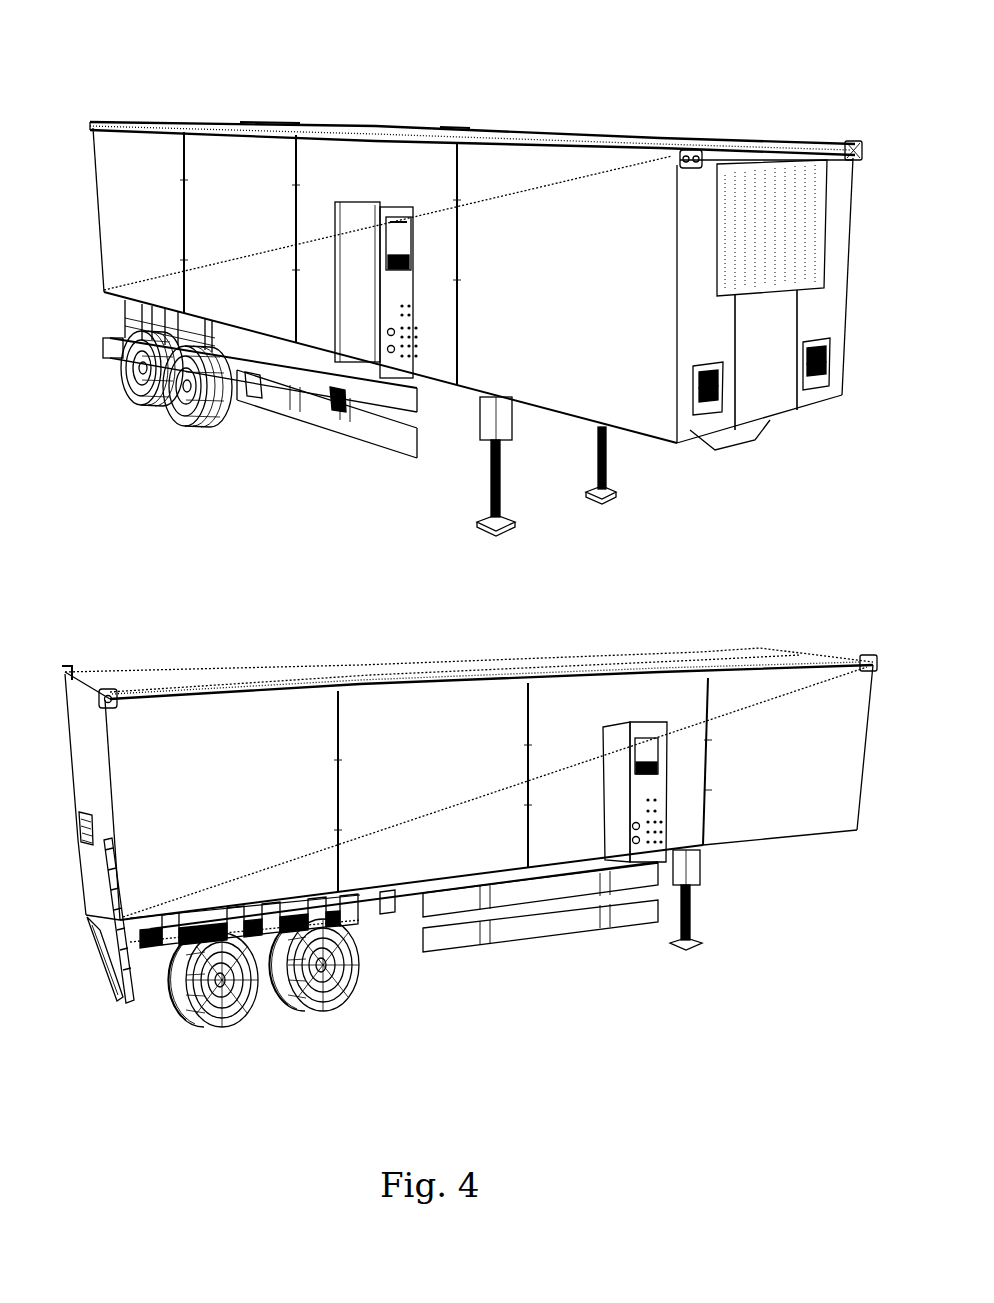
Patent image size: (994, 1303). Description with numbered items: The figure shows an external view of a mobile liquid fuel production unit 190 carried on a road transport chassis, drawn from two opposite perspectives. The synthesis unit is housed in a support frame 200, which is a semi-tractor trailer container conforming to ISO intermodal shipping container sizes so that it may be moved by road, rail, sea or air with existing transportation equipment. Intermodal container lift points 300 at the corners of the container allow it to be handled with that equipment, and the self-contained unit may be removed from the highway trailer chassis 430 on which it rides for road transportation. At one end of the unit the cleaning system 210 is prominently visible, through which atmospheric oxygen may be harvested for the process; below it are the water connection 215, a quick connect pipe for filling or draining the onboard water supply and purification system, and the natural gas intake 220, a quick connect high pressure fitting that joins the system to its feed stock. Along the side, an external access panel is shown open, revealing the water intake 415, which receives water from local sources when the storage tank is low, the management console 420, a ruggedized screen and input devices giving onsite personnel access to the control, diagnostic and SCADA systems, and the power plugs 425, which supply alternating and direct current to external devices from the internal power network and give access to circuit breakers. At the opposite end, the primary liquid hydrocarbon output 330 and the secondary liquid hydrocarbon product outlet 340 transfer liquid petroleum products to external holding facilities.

The mobile trailer unit 190 is at (208, 118).
The support frame 200 is at (277, 134).
The intermodal container lift points 300 is at (843, 132).
The cleaning system 210 is at (741, 185).
The water connection 215 is at (706, 402).
The natural gas intake 220 is at (815, 382).
The water intake 415 is at (350, 226).
The management console 420 is at (404, 246).
The power plugs 425 is at (396, 360).
The highway trailer chassis 430 is at (539, 410).
The secondary liquid hydrocarbon product outlet 340 is at (82, 848).
The primary liquid hydrocarbon output 330 is at (109, 862).